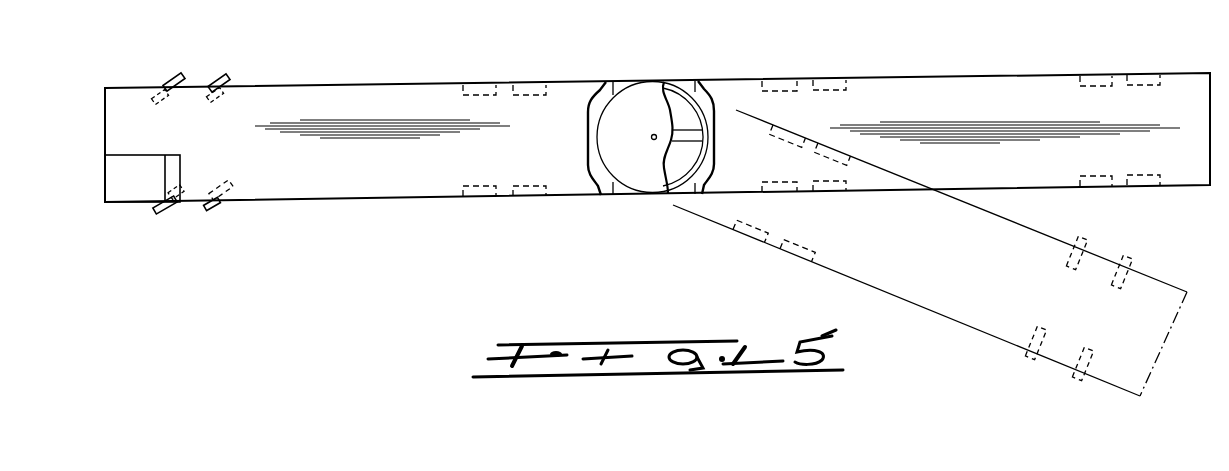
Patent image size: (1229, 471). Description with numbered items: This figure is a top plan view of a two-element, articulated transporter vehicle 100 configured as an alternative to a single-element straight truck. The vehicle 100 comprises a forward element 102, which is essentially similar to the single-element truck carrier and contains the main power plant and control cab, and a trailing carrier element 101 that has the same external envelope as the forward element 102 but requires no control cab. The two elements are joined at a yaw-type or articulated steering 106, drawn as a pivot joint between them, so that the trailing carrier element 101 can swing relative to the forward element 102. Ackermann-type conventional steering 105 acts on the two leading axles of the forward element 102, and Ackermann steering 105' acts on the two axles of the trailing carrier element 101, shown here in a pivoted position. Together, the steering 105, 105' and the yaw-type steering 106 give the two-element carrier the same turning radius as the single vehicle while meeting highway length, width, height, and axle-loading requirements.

The articulated vehicle 100 is at (1028, 63).
The trailing carrier element 101 is at (940, 78).
The forward element 102 is at (395, 84).
The Ackermann-type steering 105 is at (211, 70).
The Ackermann steering of trailing element axles 105' is at (932, 253).
The yaw-type steering 106 is at (654, 134).